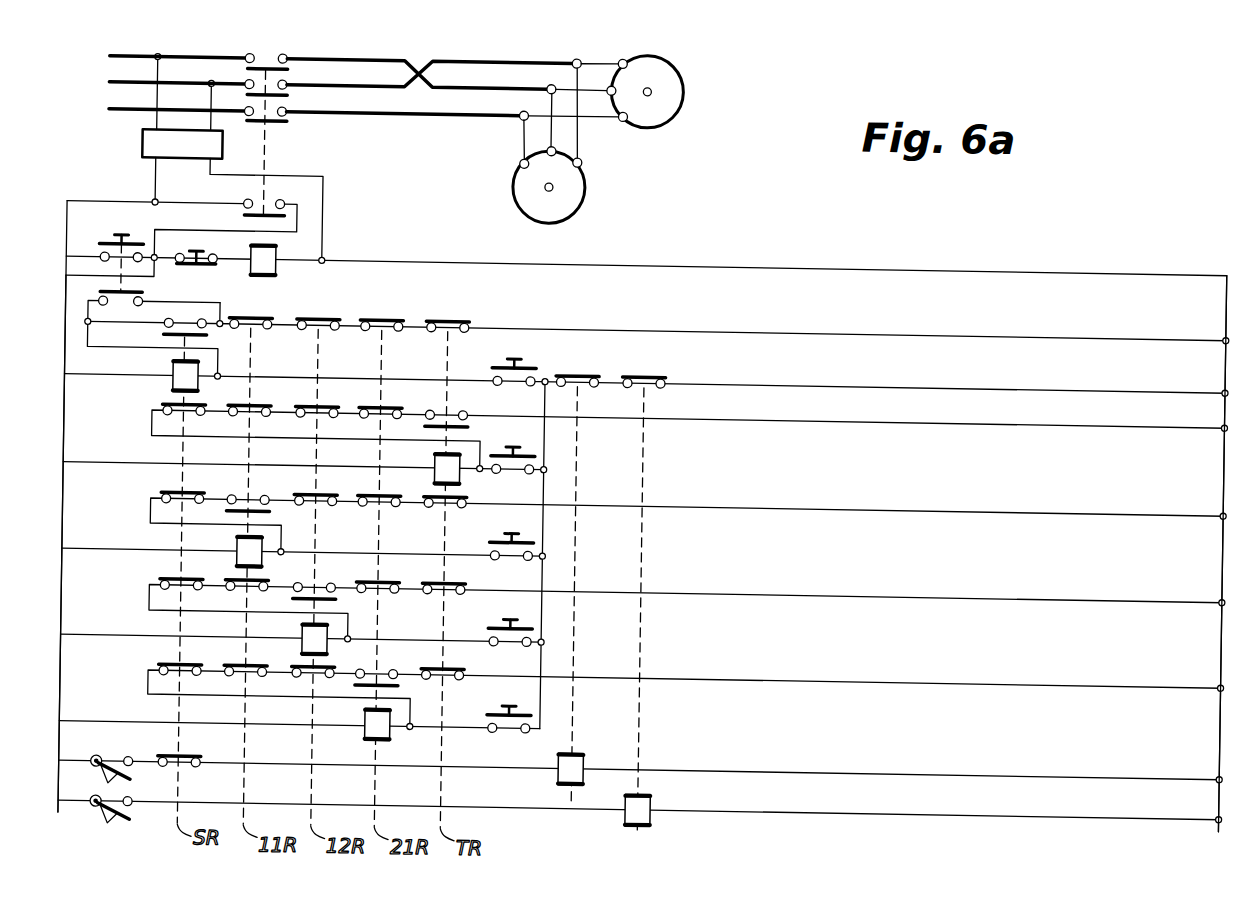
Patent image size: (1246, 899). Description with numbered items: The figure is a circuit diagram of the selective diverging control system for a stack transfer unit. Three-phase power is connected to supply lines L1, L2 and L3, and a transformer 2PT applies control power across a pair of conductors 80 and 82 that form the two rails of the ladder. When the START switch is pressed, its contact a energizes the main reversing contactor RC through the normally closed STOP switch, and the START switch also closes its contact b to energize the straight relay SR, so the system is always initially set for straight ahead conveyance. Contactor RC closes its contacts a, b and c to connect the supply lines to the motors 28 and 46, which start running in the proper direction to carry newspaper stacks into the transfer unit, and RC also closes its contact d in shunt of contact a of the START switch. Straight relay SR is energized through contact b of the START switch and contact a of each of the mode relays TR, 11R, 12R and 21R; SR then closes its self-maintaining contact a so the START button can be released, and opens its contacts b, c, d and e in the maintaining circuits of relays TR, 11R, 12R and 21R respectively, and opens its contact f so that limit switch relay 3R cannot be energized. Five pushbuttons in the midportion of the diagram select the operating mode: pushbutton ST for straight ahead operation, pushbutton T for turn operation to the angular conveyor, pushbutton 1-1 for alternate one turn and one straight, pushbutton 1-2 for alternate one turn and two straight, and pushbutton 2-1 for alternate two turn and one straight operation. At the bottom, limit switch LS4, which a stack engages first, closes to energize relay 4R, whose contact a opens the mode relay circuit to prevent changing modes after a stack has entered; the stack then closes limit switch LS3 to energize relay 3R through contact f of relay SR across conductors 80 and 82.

The motor 28 is at (680, 82).
The motor 46 is at (582, 179).
The conductor 80 is at (64, 419).
The conductor 82 is at (1222, 445).
The supply line L1 is at (345, 95).
The supply line L2 is at (348, 105).
The supply line L3 is at (348, 128).
The transformer 2PT is at (182, 143).
The main reversing contactor RC is at (274, 262).
The START switch START is at (111, 233).
The STOP switch STOP is at (189, 247).
The straight relay SR is at (172, 367).
The relay TR is at (435, 454).
The relay 11R is at (239, 541).
The relay 12R is at (305, 627).
The relay 21R is at (370, 713).
The limit switch relay 3R is at (589, 753).
The relay 4R is at (659, 793).
The pushbutton ST is at (535, 359).
The pushbutton T is at (536, 449).
The pushbutton 1-1 is at (536, 536).
The pushbutton 1-2 is at (536, 622).
The pushbutton 2-1 is at (523, 693).
The limit switch LS3 is at (114, 755).
The limit switch LS4 is at (117, 822).
The contact a is at (373, 222).
The contact b is at (275, 255).
The contact c is at (317, 313).
The contact d is at (304, 399).
The contact e is at (300, 659).
The contact f is at (175, 746).